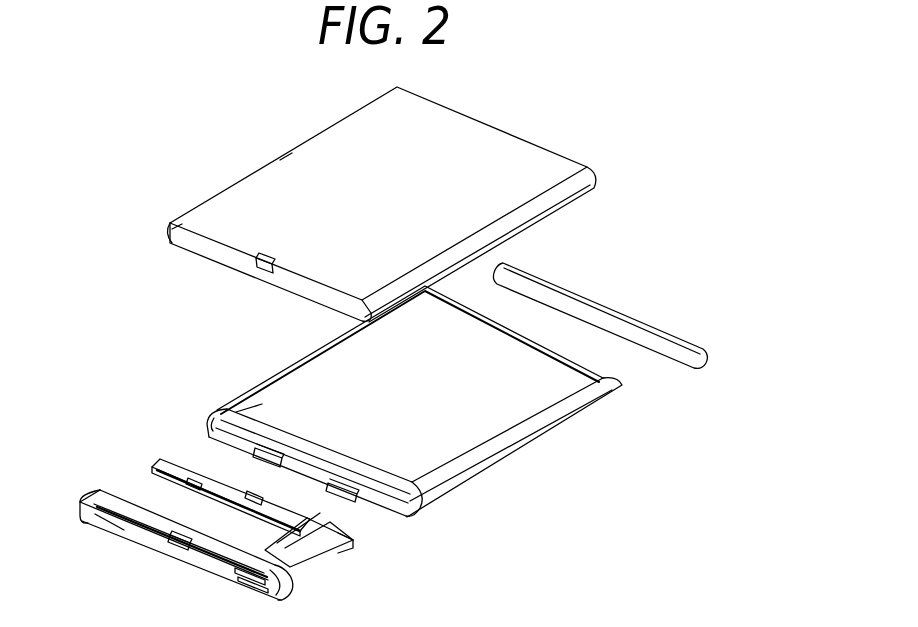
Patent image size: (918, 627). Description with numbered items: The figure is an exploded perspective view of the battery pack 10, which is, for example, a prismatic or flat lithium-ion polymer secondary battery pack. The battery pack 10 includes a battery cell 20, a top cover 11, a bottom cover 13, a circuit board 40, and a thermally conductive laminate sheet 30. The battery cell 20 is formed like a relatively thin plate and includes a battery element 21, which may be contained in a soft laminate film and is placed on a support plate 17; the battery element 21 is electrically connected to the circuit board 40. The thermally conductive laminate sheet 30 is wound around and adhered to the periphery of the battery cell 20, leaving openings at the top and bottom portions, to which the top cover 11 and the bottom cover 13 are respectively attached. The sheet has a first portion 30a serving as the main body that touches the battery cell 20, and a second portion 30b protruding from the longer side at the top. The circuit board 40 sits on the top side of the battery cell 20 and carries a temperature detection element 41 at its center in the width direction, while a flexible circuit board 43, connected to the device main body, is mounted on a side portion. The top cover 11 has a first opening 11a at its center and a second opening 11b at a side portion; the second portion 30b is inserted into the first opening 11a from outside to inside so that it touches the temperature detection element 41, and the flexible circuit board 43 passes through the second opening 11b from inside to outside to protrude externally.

The battery pack 10 is at (590, 581).
The top cover 11 is at (86, 516).
The first opening 11a is at (178, 541).
The second opening 11b is at (256, 583).
The bottom cover 13 is at (608, 310).
The support plate 17 is at (568, 424).
The battery cell 20 is at (293, 356).
The battery element 21 is at (262, 406).
The thermally conductive laminate sheet 30 is at (326, 113).
The first portion 30a is at (287, 157).
The second portion 30b is at (257, 264).
The circuit board 40 is at (160, 461).
The temperature detection element 41 is at (252, 494).
The flexible circuit board 43 is at (310, 544).